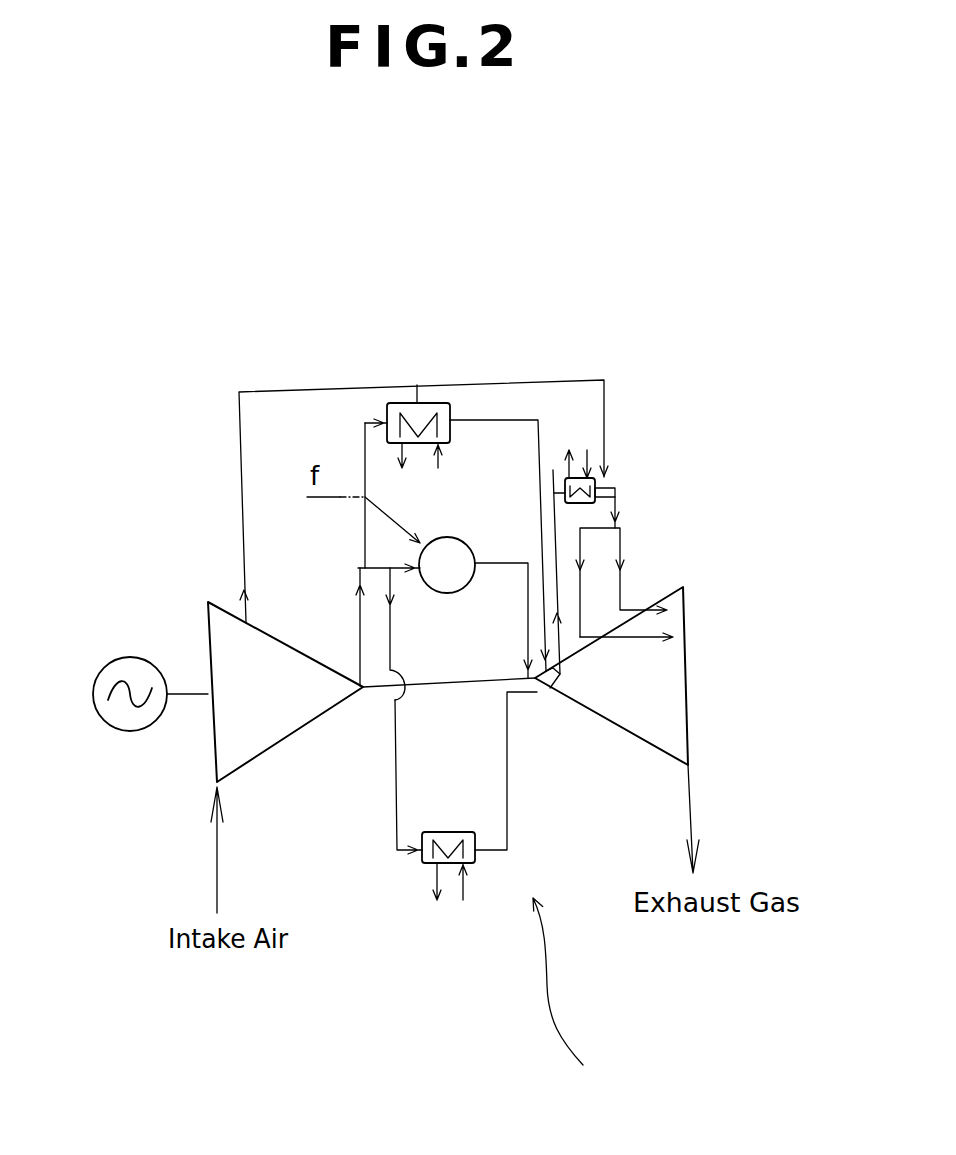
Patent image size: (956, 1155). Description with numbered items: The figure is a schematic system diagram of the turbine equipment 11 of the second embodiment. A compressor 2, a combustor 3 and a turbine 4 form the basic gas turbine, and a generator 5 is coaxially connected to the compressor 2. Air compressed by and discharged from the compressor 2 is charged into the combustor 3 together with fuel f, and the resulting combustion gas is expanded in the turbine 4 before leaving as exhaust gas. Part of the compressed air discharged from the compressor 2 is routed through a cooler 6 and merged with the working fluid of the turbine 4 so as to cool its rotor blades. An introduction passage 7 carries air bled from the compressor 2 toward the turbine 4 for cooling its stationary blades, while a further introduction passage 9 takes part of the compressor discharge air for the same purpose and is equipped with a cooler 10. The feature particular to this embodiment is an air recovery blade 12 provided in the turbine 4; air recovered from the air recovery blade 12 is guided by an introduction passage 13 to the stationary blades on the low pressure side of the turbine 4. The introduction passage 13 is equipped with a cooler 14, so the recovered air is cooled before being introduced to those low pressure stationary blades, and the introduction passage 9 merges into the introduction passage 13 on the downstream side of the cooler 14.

The compressor 2 is at (235, 722).
The combustor 3 is at (428, 586).
The turbine 4 is at (657, 700).
The generator 5 is at (114, 660).
The cooler 6 is at (423, 862).
The introduction passage 7 is at (273, 390).
The introduction passage 9 is at (503, 418).
The cooler 10 is at (417, 403).
The turbine equipment 11 is at (573, 994).
The air recovery blade 12 is at (567, 697).
The introduction passage 13 is at (553, 470).
The cooler 14 is at (615, 493).